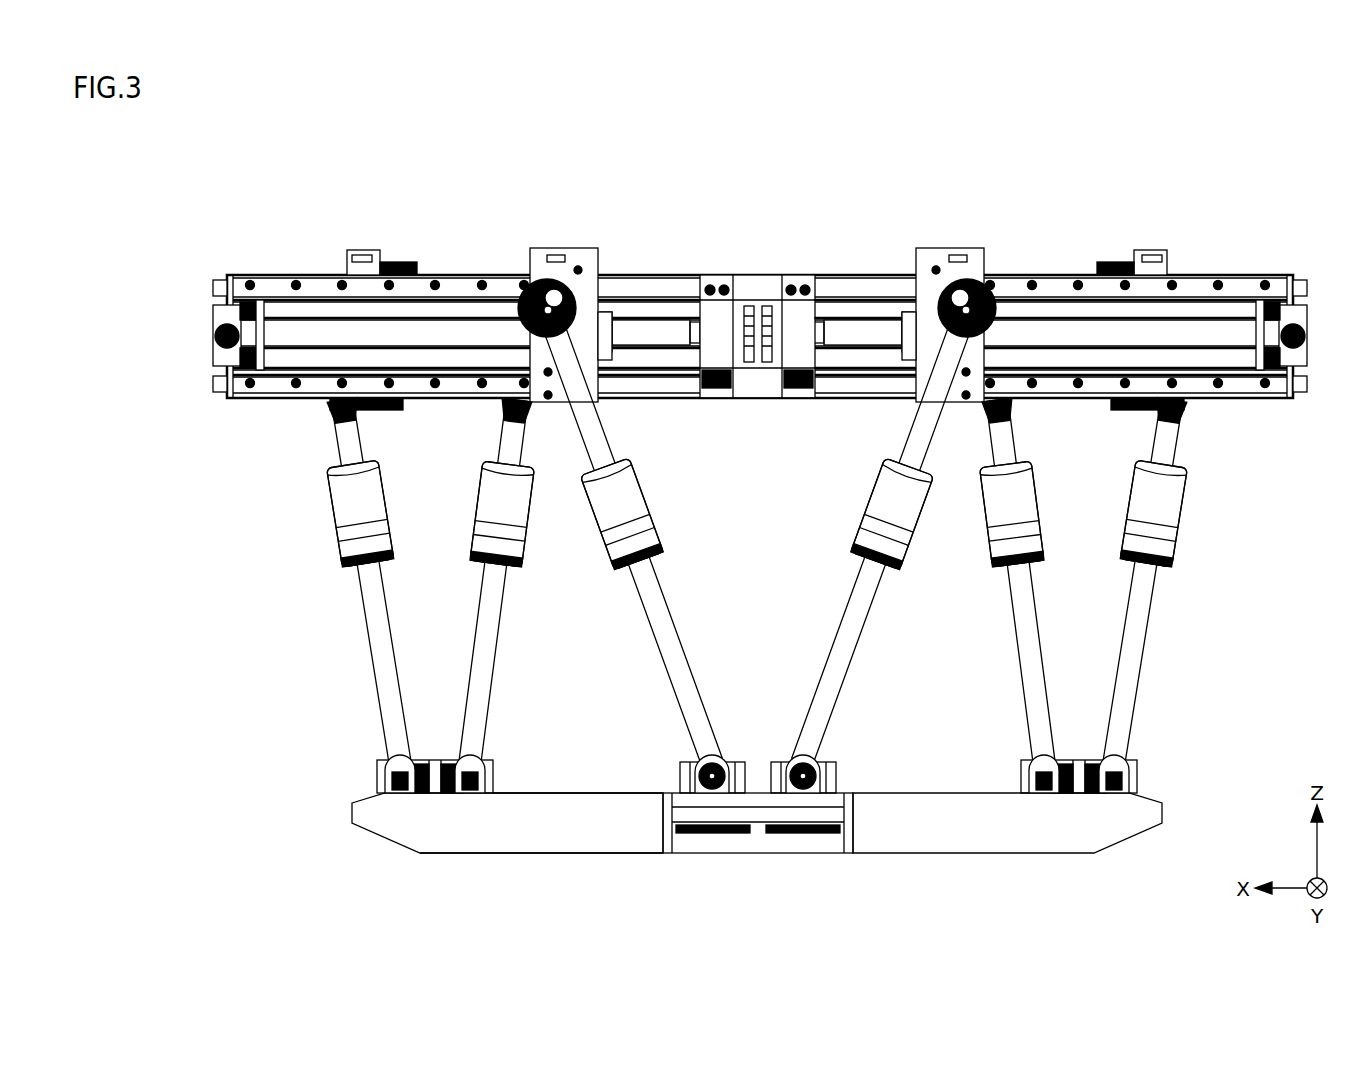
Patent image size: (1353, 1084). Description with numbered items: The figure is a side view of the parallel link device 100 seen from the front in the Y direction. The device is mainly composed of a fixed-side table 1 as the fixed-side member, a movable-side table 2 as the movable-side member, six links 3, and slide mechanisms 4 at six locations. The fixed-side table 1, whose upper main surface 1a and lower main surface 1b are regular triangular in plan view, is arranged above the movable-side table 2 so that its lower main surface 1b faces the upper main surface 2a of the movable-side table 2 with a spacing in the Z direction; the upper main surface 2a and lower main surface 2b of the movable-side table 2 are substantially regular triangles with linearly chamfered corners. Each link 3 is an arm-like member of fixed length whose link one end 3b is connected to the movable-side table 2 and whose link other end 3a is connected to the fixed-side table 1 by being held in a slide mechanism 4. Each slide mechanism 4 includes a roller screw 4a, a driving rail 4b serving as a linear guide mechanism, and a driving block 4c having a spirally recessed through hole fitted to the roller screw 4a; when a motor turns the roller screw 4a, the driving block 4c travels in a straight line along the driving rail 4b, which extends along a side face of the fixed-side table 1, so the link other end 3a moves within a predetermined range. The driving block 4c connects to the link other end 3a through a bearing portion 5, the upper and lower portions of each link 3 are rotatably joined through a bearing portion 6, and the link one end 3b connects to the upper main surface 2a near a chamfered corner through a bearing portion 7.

The parallel link device 100 is at (1247, 194).
The fixed-side table 1 is at (668, 276).
The upper main surface 1a is at (767, 277).
The lower main surface 1b is at (817, 400).
The movable-side table 2 is at (622, 832).
The upper main surface 2a is at (567, 792).
The lower main surface 2b is at (567, 854).
The link 3 is at (378, 652).
The link other end 3a is at (562, 395).
The link one end 3b is at (396, 762).
The slide mechanism 4 is at (540, 192).
The roller screw 4a is at (465, 327).
The driving rail 4b is at (452, 282).
The driving block 4c is at (540, 257).
The bearing portion 5 is at (590, 248).
The bearing portion 6 is at (356, 498).
The bearing portion 7 is at (378, 776).